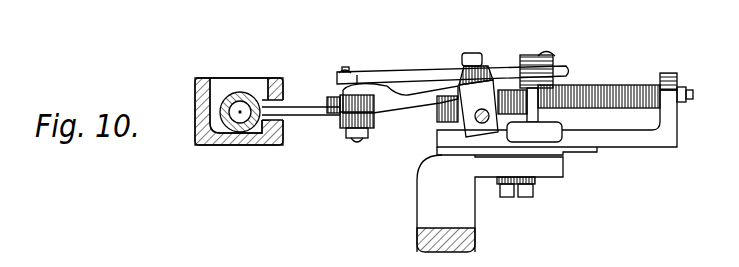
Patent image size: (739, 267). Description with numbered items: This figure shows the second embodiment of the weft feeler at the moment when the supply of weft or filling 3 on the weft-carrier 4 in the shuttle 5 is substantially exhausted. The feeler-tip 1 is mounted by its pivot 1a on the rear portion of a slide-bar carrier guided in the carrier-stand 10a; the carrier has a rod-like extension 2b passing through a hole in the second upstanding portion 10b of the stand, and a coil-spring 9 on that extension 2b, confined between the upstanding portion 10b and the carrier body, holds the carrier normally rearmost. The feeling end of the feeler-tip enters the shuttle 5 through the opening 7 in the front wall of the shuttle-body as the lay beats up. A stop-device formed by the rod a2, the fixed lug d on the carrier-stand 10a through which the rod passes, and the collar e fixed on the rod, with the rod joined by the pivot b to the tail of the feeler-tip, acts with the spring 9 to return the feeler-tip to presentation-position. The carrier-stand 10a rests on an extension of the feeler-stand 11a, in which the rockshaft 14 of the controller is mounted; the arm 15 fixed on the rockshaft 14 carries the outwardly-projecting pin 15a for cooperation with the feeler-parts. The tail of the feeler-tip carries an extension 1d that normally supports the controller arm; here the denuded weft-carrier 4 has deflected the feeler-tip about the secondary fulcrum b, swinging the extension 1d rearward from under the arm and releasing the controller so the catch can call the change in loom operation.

The shuttle 5 is at (195, 86).
The supply of weft or filling 3 is at (234, 93).
The weft-carrier 4 is at (246, 98).
The feeler-tip 1 is at (298, 116).
The opening in front wall of shuttle-body 7 is at (284, 103).
The extension of feeler-tip tail 1d is at (335, 114).
The pivot of feeler-tip 1a is at (361, 143).
The rod of stop-device a2 is at (365, 71).
The pivot (secondary fulcrum) b is at (341, 67).
The arm 15 is at (341, 91).
The collar e is at (339, 74).
The outwardly-projecting pin 15a is at (405, 99).
The rockshaft 14 is at (478, 121).
The lug d is at (525, 55).
The coil-spring 9 is at (574, 87).
The second upstanding portion of stand 10b is at (674, 73).
The rod-like extension of carrier 2b is at (690, 88).
The carrier-stand 10a is at (613, 152).
The feeler-stand 11a is at (417, 242).